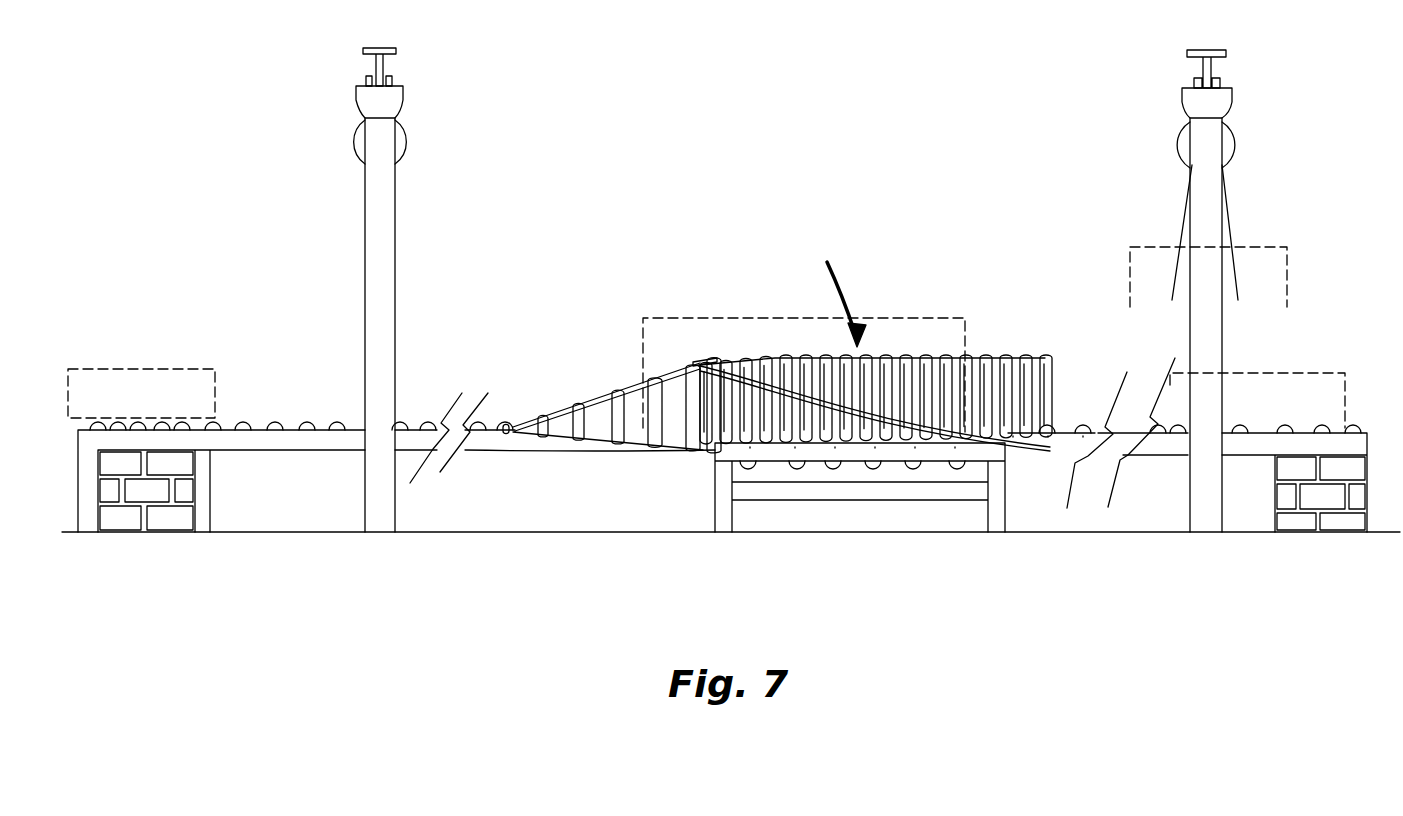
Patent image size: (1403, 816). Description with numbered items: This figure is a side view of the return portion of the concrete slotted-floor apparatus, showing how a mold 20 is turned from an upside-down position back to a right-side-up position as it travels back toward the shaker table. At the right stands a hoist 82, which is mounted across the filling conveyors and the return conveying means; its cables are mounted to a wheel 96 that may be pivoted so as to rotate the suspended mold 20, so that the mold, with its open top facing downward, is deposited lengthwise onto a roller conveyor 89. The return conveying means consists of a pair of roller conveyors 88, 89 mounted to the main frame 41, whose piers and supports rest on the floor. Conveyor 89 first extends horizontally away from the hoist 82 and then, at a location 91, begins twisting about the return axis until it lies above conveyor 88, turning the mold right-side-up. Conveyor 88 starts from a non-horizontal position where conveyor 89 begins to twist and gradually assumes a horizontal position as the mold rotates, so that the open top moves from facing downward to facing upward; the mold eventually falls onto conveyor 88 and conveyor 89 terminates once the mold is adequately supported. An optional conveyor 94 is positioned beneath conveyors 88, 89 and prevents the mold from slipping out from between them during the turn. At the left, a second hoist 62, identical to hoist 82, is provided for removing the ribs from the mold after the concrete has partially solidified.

The mold 20 is at (217, 370).
The main frame 41 is at (1292, 523).
The hoist 62 is at (397, 197).
The hoist 82 is at (1197, 65).
The roller conveyor 88 is at (325, 443).
The roller conveyor 89 is at (728, 360).
The location 91 is at (839, 290).
The optional conveyor 94 is at (890, 453).
The wheel 96 is at (1236, 150).